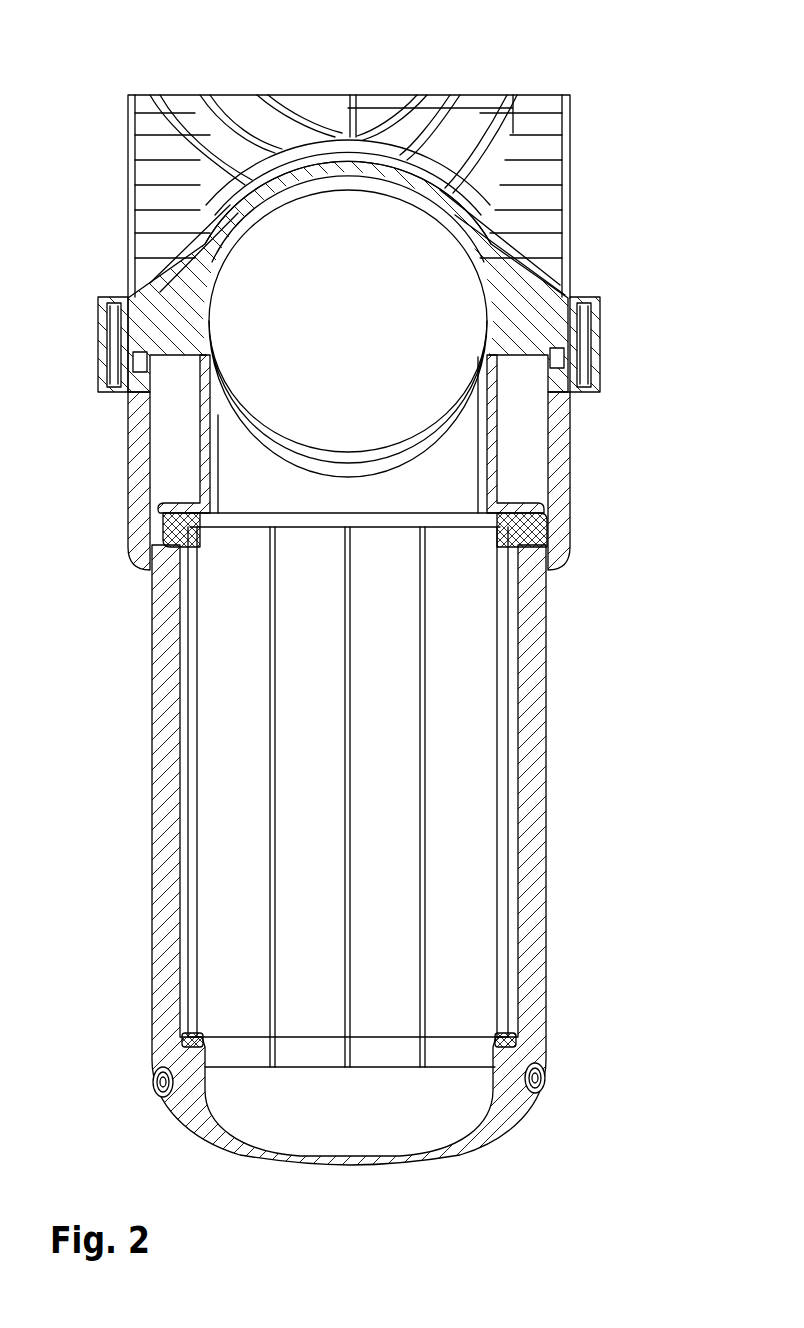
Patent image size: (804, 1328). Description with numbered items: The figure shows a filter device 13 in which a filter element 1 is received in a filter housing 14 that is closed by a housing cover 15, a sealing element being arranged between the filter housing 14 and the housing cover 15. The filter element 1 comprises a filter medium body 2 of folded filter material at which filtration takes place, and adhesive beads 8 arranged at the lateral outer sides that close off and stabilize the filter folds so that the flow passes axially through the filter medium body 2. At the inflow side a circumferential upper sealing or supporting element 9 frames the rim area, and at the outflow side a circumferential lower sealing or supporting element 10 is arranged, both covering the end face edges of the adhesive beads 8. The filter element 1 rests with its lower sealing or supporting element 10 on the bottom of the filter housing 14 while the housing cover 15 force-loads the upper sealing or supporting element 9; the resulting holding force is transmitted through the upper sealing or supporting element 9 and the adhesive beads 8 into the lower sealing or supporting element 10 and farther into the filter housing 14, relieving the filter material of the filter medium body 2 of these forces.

The filter device 13 is at (68, 66).
The housing cover 15 is at (145, 303).
The filter housing 14 is at (160, 694).
The filter medium body 2 is at (470, 692).
The adhesive beads 8 is at (195, 866).
The filter element 1 is at (228, 783).
The first sealing or supporting element 9 is at (195, 522).
The sealing or supporting element 10 is at (192, 1042).